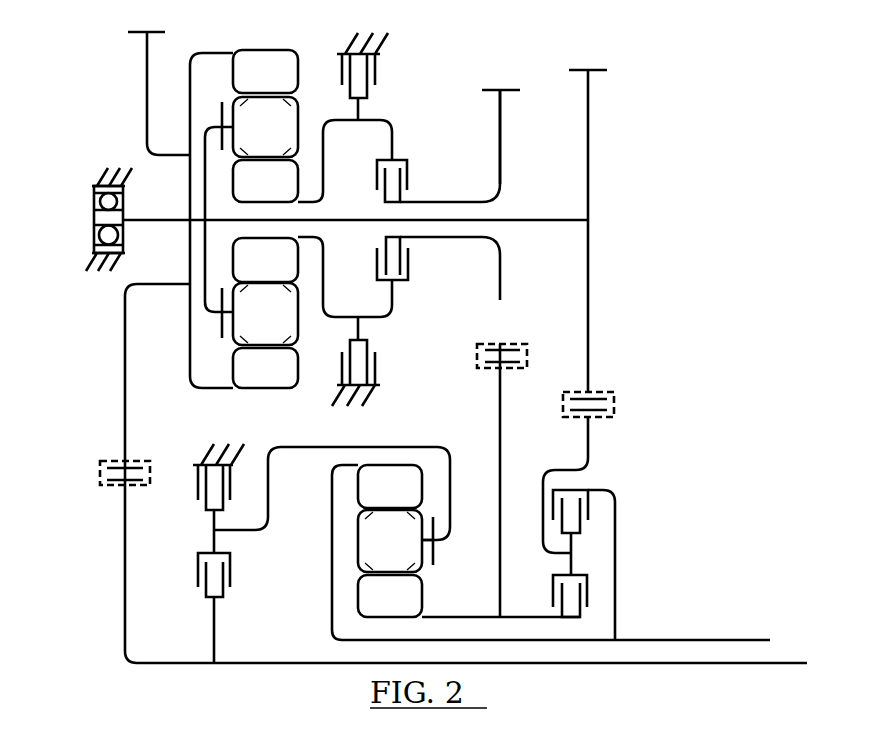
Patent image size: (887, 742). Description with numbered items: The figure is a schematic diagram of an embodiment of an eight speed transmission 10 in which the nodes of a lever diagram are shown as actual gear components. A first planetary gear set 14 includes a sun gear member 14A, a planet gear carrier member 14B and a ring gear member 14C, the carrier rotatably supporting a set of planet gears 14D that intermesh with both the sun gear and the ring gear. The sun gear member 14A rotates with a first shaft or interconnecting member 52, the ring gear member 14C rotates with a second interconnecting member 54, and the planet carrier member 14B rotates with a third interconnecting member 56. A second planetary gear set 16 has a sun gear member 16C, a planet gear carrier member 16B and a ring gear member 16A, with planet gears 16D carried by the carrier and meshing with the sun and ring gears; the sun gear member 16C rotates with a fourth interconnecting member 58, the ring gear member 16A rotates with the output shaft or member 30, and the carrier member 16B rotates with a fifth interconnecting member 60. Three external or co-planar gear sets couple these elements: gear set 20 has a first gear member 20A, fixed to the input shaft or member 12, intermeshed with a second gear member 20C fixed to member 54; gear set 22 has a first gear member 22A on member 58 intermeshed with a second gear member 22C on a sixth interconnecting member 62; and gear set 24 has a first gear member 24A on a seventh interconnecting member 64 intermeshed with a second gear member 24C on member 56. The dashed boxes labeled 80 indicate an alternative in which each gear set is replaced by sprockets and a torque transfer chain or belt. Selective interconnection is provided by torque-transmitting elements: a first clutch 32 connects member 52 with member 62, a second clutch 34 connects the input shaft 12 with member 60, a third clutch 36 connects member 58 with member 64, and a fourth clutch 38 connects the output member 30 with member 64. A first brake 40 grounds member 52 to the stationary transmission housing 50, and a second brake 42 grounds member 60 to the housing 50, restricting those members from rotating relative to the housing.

The eight speed transmission 10 is at (672, 93).
The input shaft or member 12 is at (683, 663).
The planetary gear set 14 is at (202, 197).
The sun gear member 14A is at (265, 221).
The planet gear carrier member 14B is at (221, 102).
The ring gear member 14C is at (265, 219).
The planet gears 14D is at (265, 221).
The planetary gear set 16 is at (442, 555).
The ring gear member 16A is at (390, 486).
The planet gear carrier member 16B is at (437, 545).
The sun gear member 16C is at (390, 596).
The planet gears 16D is at (390, 541).
The external or co-planar gear set 20 is at (93, 510).
The first gear member 20A is at (125, 622).
The second gear member 20C is at (147, 78).
The external or co-planar gear set 22 is at (504, 76).
The first gear member 22A is at (500, 395).
The second gear member 22C is at (500, 160).
The external or co-planar gear set 24 is at (600, 57).
The first gear member 24A is at (590, 447).
The second gear member 24C is at (590, 157).
The output shaft or member 30 is at (680, 640).
The first clutch 32 is at (407, 178).
The second clutch 34 is at (198, 562).
The third clutch 36 is at (553, 593).
The fourth clutch 38 is at (553, 503).
The first brake 40 is at (377, 78).
The second brake 42 is at (198, 483).
The transmission housing 50 is at (95, 262).
The first shaft or interconnecting member 52 is at (325, 157).
The second shaft or interconnecting member 54 is at (188, 108).
The third shaft or interconnecting member 56 is at (548, 218).
The fourth shaft or interconnecting member 58 is at (472, 615).
The fifth shaft or interconnecting member 60 is at (270, 516).
The sixth shaft or interconnecting member 62 is at (480, 200).
The seventh shaft or interconnecting member 64 is at (573, 543).
The dashed boxes representing sprocket sets and chain or belt 80 is at (100, 480).